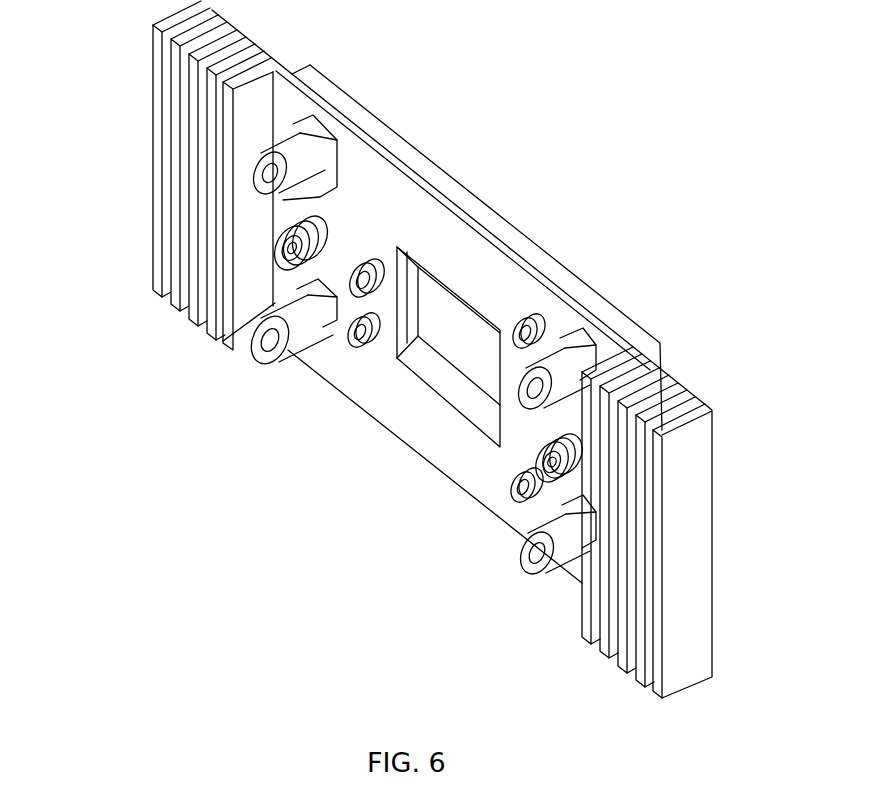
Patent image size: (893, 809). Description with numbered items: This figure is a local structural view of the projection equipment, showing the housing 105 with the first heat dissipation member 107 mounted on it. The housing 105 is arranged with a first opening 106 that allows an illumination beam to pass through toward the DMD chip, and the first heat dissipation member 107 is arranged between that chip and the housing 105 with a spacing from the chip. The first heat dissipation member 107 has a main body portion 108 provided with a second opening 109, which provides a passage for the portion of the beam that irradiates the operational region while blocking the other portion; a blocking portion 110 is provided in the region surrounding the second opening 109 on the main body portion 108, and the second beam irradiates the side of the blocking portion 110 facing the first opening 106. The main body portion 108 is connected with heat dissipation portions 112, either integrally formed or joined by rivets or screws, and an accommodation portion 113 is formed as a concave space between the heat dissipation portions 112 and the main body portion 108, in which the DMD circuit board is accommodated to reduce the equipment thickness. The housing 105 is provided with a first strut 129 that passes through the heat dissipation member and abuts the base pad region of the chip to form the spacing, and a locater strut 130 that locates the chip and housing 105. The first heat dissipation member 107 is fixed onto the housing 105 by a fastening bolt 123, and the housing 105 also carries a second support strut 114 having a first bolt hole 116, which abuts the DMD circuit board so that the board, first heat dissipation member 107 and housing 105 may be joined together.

The housing 105 is at (550, 273).
The first opening 106 is at (427, 365).
The first heat dissipation member 107 is at (713, 507).
The main body portion 108 is at (355, 375).
The second opening 109 is at (453, 403).
The blocking portion 110 is at (417, 241).
The heat dissipation portion 112 is at (183, 225).
The accommodation portion 113 is at (500, 507).
The second support strut 114 is at (300, 167).
The first bolt hole 116 is at (267, 170).
The fastening bolt 123 is at (247, 303).
The first strut 129 is at (520, 340).
The locater strut 130 is at (357, 327).